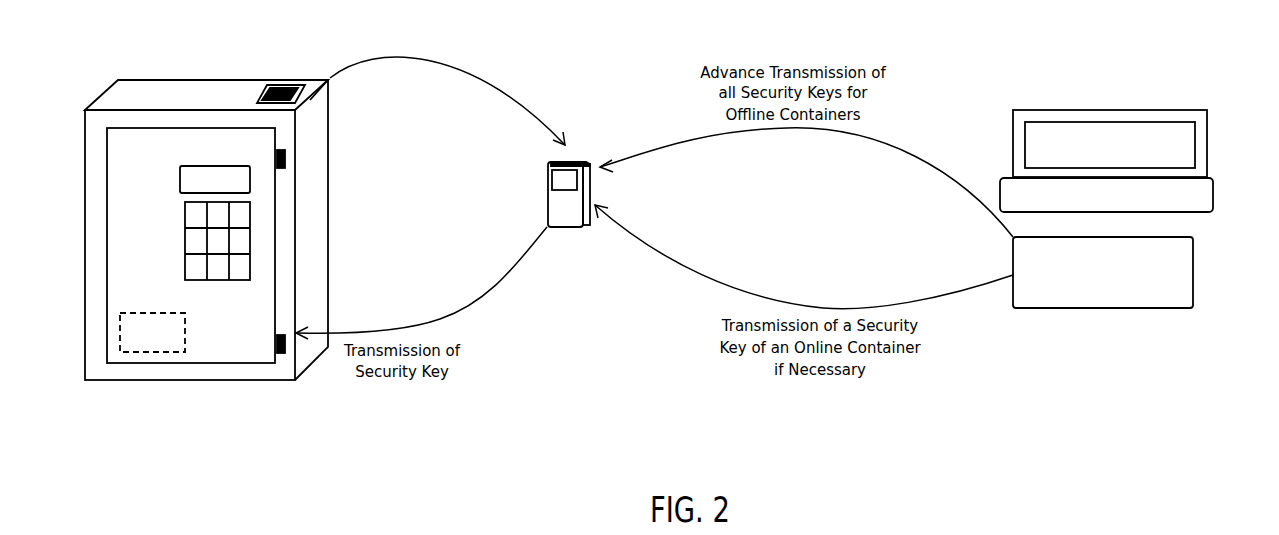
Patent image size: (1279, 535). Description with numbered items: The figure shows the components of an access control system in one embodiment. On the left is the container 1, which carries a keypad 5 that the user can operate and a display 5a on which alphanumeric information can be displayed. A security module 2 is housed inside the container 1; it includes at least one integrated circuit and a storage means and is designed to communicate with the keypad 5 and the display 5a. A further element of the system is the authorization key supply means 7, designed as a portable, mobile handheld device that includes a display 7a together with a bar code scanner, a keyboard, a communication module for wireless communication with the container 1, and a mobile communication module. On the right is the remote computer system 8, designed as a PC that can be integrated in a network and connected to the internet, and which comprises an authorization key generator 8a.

The container 1 is at (146, 86).
The security module 2 is at (134, 353).
The keypad 5 is at (185, 240).
The display 5a is at (180, 177).
The authorization key supply means 7 is at (563, 228).
The display 7a is at (550, 181).
The remote computer system 8 is at (1214, 142).
The authorization key generator 8a is at (1165, 309).